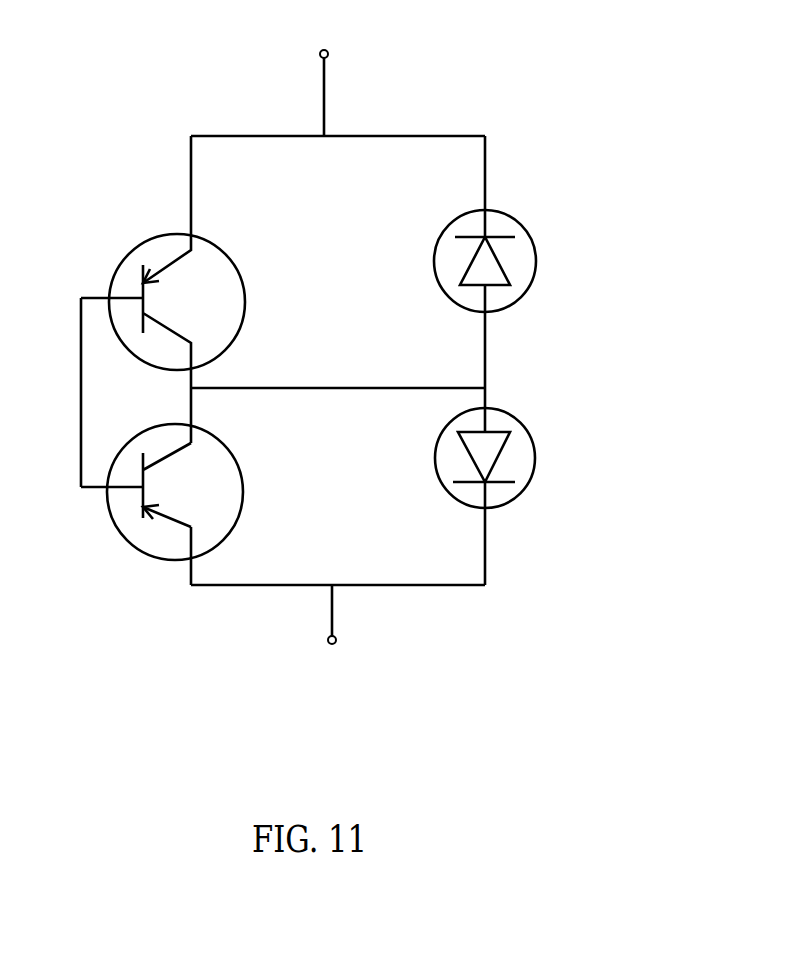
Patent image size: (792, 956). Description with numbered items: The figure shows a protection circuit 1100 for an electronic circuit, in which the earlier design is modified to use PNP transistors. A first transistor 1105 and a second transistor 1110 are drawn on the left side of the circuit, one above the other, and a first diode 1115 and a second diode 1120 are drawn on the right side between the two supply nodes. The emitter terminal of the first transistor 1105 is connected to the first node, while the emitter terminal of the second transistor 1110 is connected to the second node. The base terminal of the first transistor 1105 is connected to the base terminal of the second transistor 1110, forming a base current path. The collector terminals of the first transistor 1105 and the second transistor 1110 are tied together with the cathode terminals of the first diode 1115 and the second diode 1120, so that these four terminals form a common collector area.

The protection circuit 1100 is at (647, 142).
The first transistor 1105 is at (217, 243).
The second transistor 1110 is at (223, 453).
The first diode 1115 is at (513, 223).
The second diode 1120 is at (525, 427).